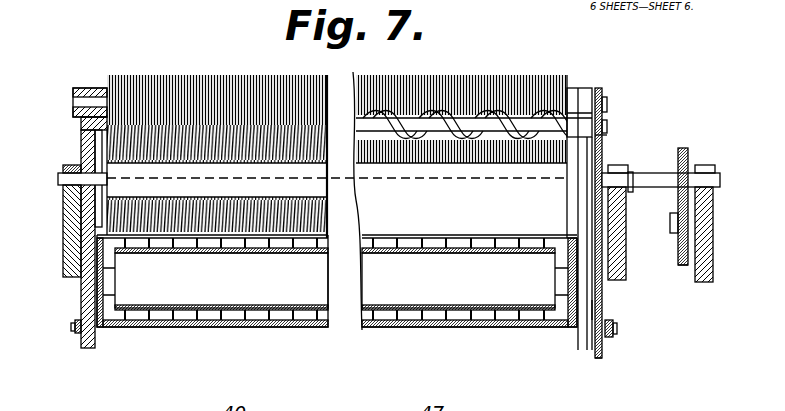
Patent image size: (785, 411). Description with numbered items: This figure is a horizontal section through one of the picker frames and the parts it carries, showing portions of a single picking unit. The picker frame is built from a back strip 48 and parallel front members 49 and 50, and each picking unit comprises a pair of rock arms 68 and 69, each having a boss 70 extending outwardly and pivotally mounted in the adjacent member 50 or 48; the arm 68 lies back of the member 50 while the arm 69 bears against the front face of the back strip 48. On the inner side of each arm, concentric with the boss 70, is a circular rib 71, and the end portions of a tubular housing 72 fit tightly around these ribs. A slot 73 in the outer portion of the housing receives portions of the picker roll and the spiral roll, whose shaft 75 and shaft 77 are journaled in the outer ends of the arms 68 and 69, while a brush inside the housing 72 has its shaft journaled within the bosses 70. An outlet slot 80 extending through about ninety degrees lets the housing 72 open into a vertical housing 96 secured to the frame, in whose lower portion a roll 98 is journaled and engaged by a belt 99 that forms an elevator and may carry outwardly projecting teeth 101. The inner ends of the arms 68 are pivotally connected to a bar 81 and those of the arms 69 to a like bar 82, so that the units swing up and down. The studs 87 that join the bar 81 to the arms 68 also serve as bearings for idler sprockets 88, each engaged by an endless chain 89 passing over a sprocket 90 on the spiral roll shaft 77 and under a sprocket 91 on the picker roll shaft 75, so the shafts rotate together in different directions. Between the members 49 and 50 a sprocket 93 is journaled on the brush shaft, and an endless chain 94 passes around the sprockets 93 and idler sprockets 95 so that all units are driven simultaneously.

The circular rib 71 is at (90, 137).
The rock arm 69 is at (88, 210).
The boss 70 is at (64, 183).
The back strip 48 is at (63, 278).
The bar 82 is at (76, 334).
The tubular housing 72 is at (474, 201).
The slot 73 is at (503, 166).
The outlet slot 80 is at (303, 233).
The roll 98 is at (180, 293).
The belt 99 is at (268, 313).
The teeth 101 is at (240, 323).
The vertical housing 96 is at (438, 328).
The rock arm 68 is at (582, 175).
The sprocket 91 is at (598, 90).
The picker roll shaft 75 is at (607, 102).
The sprocket 90 is at (607, 127).
The spiral roll shaft 77 is at (607, 131).
The front member 50 is at (627, 272).
The sprocket 93 is at (688, 157).
The idler sprocket 95 is at (672, 228).
The front member 49 is at (714, 260).
The endless chain 94 is at (686, 265).
The endless chain 89 is at (600, 310).
The stud 87 is at (618, 327).
The bar 81 is at (606, 338).
The idler sprocket 88 is at (598, 358).